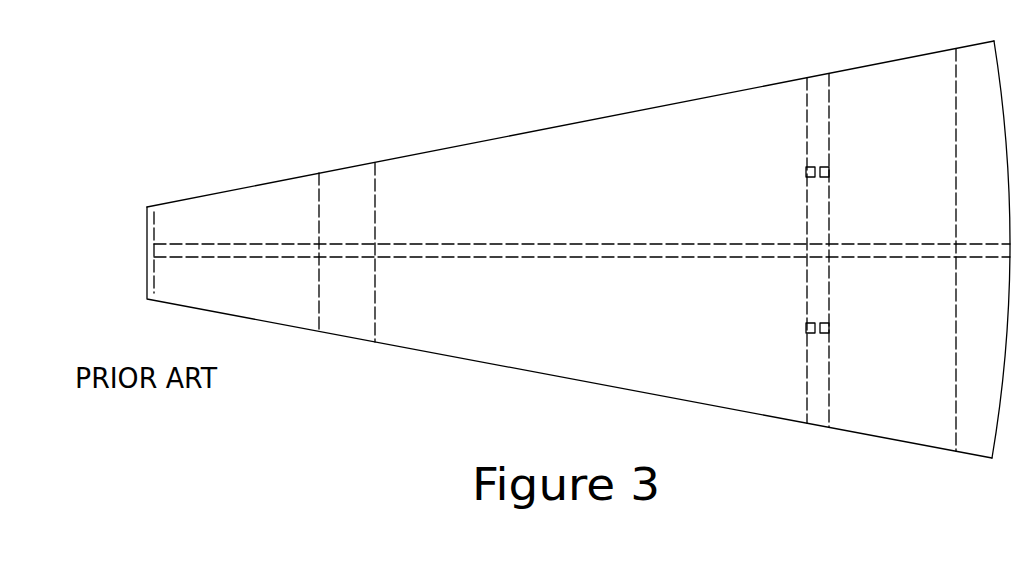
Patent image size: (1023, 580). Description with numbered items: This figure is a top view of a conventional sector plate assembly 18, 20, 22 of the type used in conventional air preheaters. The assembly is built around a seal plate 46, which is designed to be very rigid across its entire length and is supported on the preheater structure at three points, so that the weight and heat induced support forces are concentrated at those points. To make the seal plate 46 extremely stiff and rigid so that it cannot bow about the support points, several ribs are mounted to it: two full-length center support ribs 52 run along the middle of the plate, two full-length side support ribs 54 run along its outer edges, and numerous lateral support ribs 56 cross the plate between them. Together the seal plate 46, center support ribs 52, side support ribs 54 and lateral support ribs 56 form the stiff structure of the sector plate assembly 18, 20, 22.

The sector plate assembly 18 is at (578, 249).
The sector plate assembly 20 is at (578, 249).
The sector plate assembly 22 is at (401, 98).
The seal plate 46 is at (707, 318).
The center support ribs 52 is at (733, 244).
The side support ribs 54 is at (598, 116).
The lateral support ribs 56 is at (375, 213).